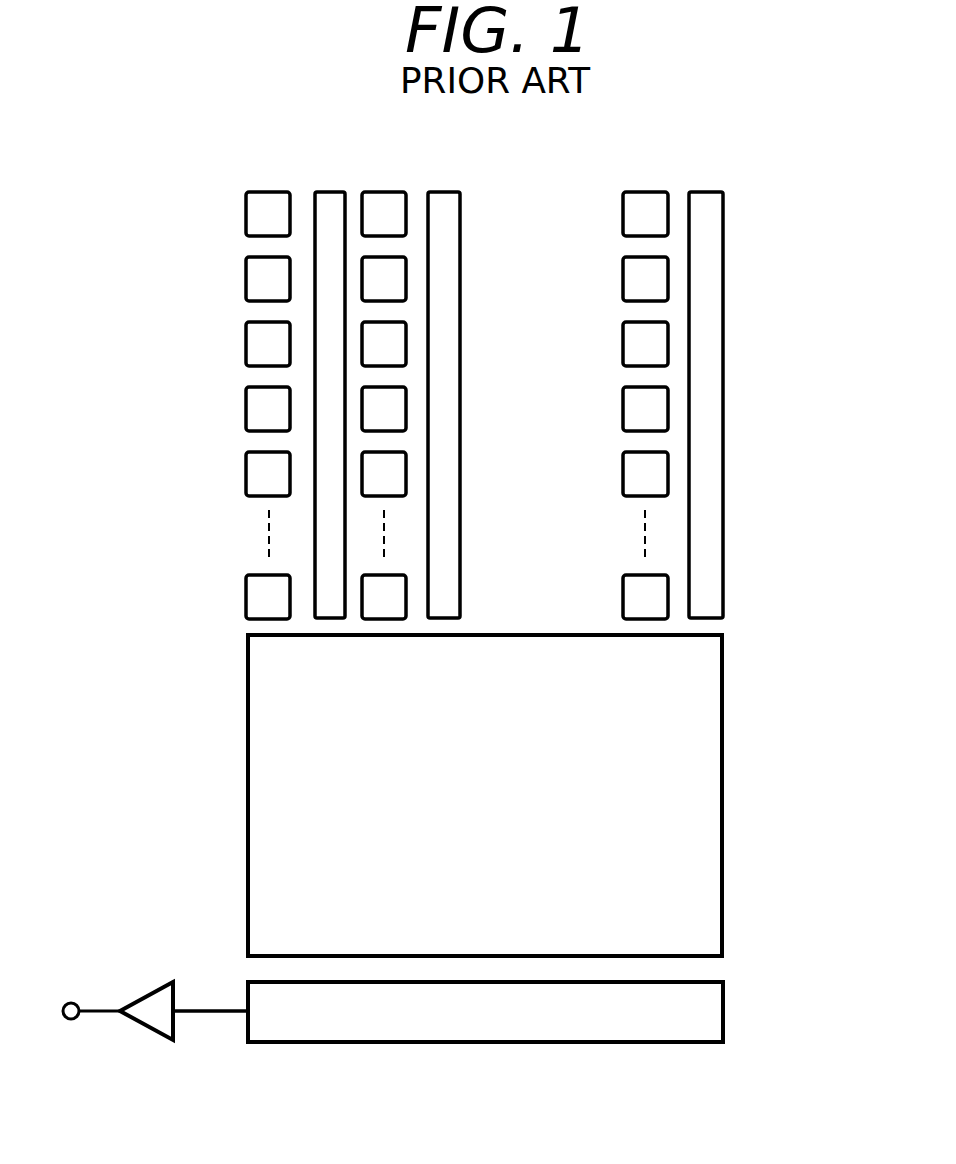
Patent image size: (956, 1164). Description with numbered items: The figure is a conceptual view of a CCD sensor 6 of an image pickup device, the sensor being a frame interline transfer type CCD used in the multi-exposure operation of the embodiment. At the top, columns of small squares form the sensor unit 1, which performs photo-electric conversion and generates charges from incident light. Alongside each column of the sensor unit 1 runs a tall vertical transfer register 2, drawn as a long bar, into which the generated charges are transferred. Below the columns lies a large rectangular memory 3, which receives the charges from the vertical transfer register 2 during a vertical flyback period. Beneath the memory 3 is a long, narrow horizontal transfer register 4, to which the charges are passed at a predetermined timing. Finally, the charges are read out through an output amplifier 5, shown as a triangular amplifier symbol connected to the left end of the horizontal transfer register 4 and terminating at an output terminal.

The sensor unit 1 is at (279, 190).
The vertical transfer register 2 is at (336, 190).
The memory 3 is at (722, 670).
The horizontal transfer register 4 is at (724, 998).
The output amplifier 5 is at (168, 1042).
The CCD sensor 6 is at (757, 209).